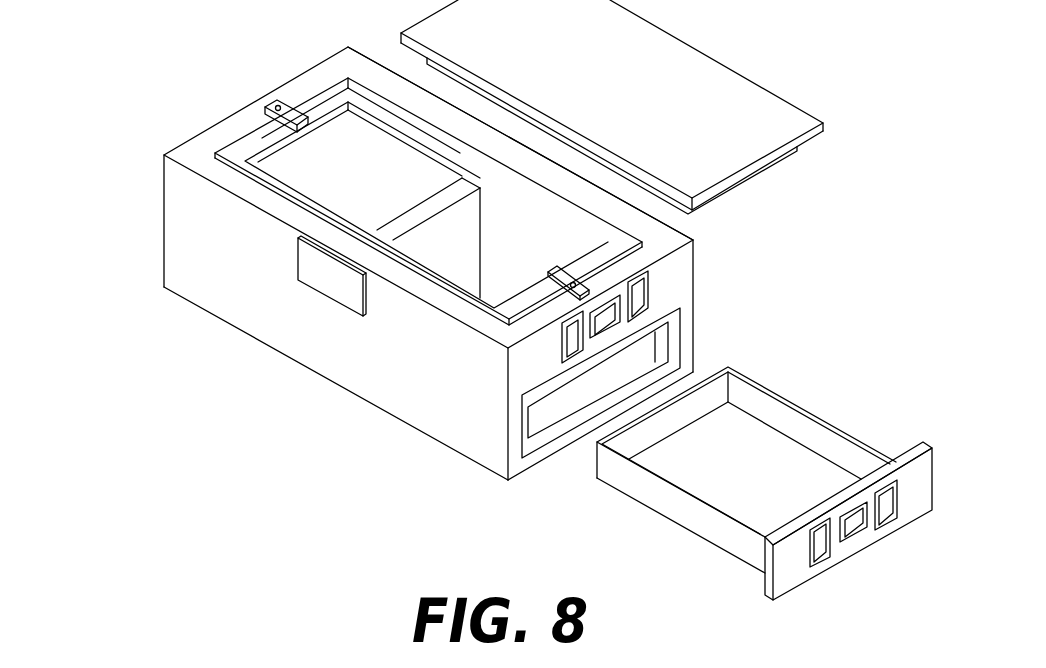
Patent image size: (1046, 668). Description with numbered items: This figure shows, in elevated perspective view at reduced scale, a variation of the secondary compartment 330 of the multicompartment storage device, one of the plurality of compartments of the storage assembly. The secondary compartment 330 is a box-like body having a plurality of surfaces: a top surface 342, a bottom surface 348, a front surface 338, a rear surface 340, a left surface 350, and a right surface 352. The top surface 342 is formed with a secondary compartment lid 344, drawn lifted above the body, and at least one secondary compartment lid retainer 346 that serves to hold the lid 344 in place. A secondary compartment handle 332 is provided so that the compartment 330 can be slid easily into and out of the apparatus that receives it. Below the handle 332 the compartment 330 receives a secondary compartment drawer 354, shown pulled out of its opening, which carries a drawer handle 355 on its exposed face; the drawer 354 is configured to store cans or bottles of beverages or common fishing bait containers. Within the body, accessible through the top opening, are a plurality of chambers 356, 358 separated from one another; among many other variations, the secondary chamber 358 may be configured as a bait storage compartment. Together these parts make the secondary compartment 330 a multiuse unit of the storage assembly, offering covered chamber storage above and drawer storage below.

The secondary compartment 330 is at (694, 333).
The secondary compartment handle 332 is at (645, 293).
The front surface 338 is at (507, 478).
The rear surface 340 is at (164, 243).
The top surface 342 is at (371, 90).
The secondary compartment lid 344 is at (733, 166).
The secondary compartment lid retainer 346 is at (265, 108).
The bottom surface 348 is at (522, 466).
The left surface 350 is at (365, 378).
The right surface 352 is at (691, 240).
The secondary compartment drawer 354 is at (814, 413).
The drawer handle 355 is at (832, 534).
The chamber 356 is at (473, 290).
The secondary chamber 358 is at (283, 185).